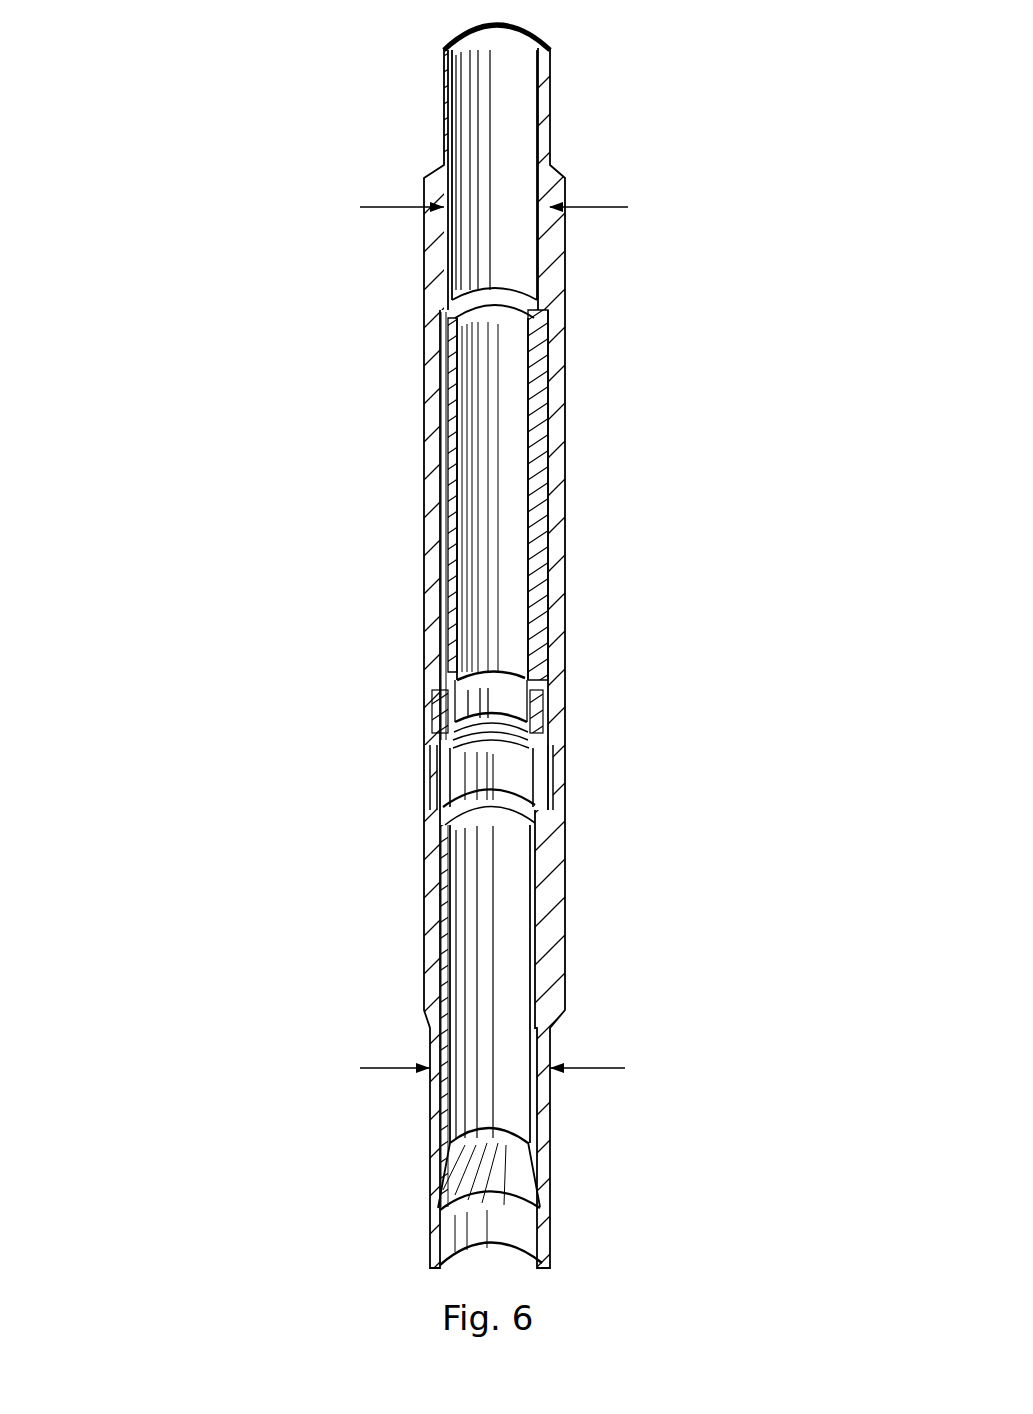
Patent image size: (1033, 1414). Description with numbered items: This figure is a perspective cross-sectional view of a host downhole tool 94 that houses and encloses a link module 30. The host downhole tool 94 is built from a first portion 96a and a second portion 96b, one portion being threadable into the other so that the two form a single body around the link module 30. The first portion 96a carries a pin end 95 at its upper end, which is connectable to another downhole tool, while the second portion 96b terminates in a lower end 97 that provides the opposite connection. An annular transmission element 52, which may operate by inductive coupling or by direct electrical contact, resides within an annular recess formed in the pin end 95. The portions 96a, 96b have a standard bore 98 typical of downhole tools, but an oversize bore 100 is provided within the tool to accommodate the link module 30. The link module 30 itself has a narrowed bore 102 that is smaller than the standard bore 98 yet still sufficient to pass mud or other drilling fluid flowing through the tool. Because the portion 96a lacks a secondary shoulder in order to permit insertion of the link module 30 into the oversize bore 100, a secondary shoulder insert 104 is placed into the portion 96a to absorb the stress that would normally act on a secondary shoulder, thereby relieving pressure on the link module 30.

The host downhole tool 94 is at (226, 226).
The pin end 95 is at (402, 111).
The first portion 96a is at (435, 237).
The second portion 96b is at (543, 955).
The lower end portion 97 is at (386, 1169).
The standard bore 98 is at (613, 207).
The oversize bore 100 is at (345, 422).
The narrowed bore 102 is at (360, 505).
The link module 30 is at (498, 607).
The annular transmission element 52 is at (552, 31).
The secondary shoulder insert 104 is at (432, 700).